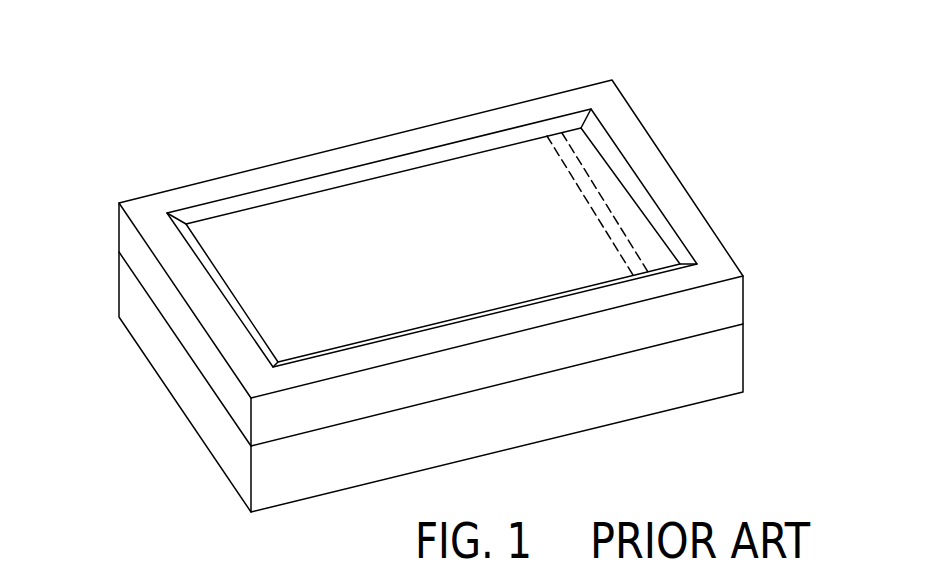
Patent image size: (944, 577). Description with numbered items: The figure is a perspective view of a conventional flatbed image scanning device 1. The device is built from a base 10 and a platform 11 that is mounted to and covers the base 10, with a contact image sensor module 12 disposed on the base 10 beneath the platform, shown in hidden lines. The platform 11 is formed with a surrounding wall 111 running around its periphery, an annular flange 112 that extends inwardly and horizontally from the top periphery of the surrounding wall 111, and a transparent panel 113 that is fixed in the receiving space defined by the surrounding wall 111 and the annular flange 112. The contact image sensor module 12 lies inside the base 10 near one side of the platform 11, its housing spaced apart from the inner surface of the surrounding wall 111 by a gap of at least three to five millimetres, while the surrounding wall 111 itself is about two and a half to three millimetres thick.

The flatbed image scanning device 1 is at (641, 96).
The base 10 is at (720, 356).
The platform 11 is at (752, 282).
The surrounding wall 111 is at (135, 247).
The annular flange 112 is at (650, 162).
The transparent panel 113 is at (317, 225).
The contact image sensor module 12 is at (573, 188).